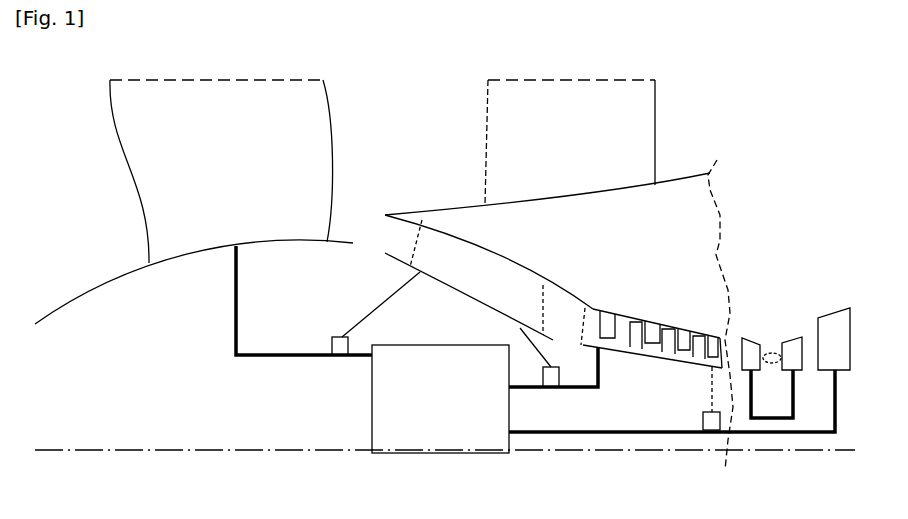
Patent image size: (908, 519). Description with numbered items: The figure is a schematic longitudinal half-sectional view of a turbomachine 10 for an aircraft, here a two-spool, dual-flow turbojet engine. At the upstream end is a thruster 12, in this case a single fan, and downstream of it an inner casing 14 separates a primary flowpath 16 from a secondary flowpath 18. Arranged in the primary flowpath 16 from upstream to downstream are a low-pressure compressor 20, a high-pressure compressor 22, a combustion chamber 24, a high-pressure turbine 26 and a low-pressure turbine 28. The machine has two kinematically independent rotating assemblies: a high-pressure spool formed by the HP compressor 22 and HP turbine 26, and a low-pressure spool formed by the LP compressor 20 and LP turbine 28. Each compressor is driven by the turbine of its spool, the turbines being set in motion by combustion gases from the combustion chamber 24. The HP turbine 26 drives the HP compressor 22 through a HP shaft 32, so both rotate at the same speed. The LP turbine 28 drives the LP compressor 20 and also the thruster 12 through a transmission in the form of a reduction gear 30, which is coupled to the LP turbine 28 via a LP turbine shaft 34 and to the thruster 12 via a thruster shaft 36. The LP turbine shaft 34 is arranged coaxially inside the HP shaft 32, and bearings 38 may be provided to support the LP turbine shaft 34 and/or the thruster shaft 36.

The turbomachine 10 is at (733, 113).
The thruster 12 is at (158, 161).
The inner casing 14 is at (675, 224).
The primary flowpath 16 is at (575, 330).
The secondary flowpath 18 is at (689, 153).
The low-pressure compressor 20 is at (600, 337).
The high-pressure compressor 22 is at (752, 347).
The combustion chamber 24 is at (768, 352).
The high-pressure turbine 26 is at (787, 342).
The low-pressure turbine 28 is at (832, 328).
The reduction gear 30 is at (452, 413).
The HP shaft 32 is at (773, 415).
The LP turbine shaft 34 is at (522, 431).
The thruster shaft 36 is at (283, 353).
The bearings 38 is at (348, 342).